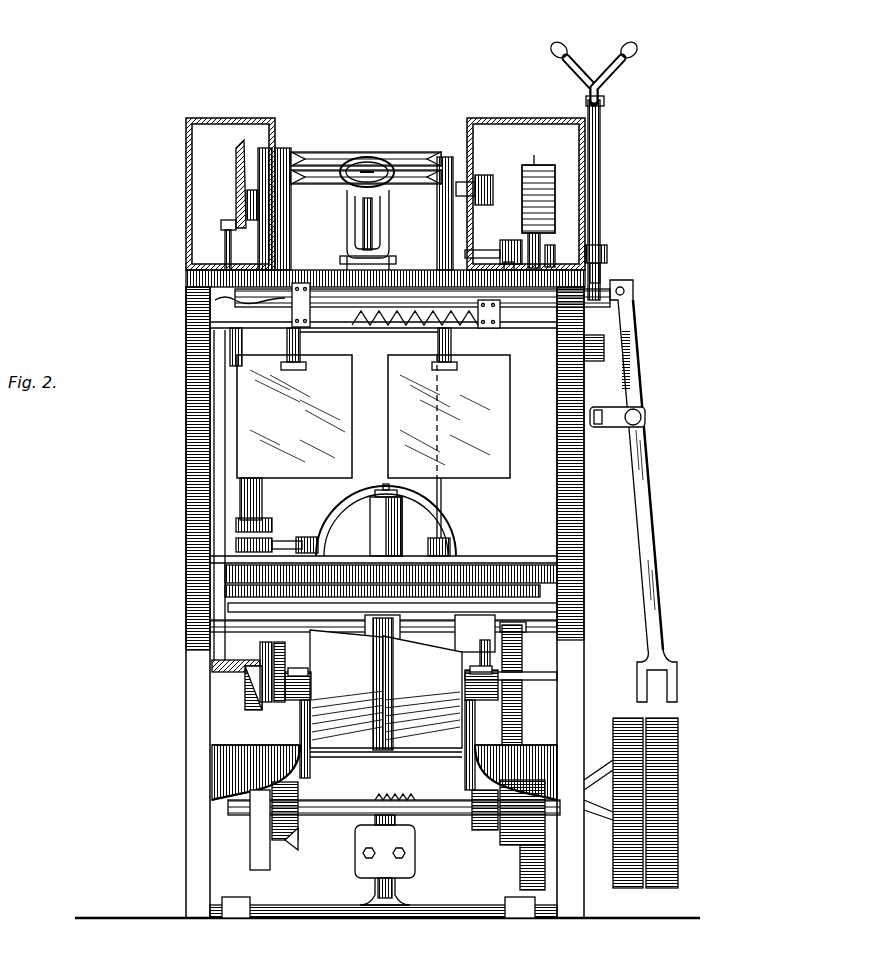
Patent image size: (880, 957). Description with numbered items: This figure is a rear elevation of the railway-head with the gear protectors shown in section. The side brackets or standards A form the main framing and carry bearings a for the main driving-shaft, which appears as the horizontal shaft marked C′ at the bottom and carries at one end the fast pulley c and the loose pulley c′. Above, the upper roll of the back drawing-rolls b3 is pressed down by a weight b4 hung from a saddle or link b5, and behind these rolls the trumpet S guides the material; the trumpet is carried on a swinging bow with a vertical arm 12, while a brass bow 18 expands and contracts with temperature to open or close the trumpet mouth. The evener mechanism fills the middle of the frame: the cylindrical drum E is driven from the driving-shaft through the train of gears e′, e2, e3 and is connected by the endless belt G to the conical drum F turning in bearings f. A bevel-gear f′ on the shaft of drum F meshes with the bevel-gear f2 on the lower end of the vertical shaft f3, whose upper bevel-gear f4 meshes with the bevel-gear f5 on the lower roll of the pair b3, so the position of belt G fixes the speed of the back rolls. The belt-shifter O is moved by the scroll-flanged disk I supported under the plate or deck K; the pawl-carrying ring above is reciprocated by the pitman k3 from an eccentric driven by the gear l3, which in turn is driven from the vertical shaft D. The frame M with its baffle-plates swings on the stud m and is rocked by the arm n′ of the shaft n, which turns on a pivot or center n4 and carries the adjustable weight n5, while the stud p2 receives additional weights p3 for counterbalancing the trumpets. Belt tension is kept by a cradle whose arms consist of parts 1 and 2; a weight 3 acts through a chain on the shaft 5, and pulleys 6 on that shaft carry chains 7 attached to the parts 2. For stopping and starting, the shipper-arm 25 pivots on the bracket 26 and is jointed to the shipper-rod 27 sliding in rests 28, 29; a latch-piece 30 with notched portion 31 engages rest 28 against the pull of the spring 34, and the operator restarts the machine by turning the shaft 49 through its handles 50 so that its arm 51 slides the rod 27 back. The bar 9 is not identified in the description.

The side brackets or standards A is at (584, 546).
The trumpet S is at (367, 157).
The back drawing-rolls b3 is at (412, 165).
The bow 18 is at (355, 205).
The vertical arm 12 is at (347, 228).
The bevel-gear f5 is at (236, 190).
The bevel-gear f4 is at (223, 232).
The vertical shaft f3 is at (214, 510).
The stud or standard p2 is at (533, 165).
The additional weights p3 is at (550, 175).
The shaft n is at (482, 250).
The pivot or center n4 is at (508, 270).
The weight n5 is at (550, 265).
The shaft 49 is at (600, 178).
The handles 50 is at (594, 72).
The arm 51 is at (608, 282).
The shipper-rod 27 is at (422, 297).
The latch-piece 30 is at (292, 295).
The rest 28 is at (290, 308).
The rest 29 is at (500, 319).
The notched portion 31 is at (275, 322).
The spring 34 is at (369, 337).
The saddle or link b5 is at (300, 338).
The weight b4 is at (373, 416).
The frame M is at (352, 492).
The stud m is at (402, 513).
The arm n′ is at (441, 487).
The vertical shaft D is at (262, 497).
The gear l3 is at (272, 522).
The pitman k3 is at (318, 540).
The plate or deck K is at (478, 556).
The disk I is at (557, 578).
The bar 9 is at (285, 600).
The belt-shifter O is at (325, 620).
The endless belt G is at (351, 689).
The conical drum F is at (422, 692).
The cylindrical drum E is at (410, 750).
The bevel-gear f2 is at (212, 667).
The bevel-gear f′ is at (248, 700).
The chain 7 is at (266, 648).
The pulleys 6 is at (280, 648).
The bearings f is at (296, 668).
The cradle part 1 is at (310, 760).
The bearings a is at (548, 820).
The shaft C′ is at (340, 800).
The weight 3 is at (250, 848).
The cradle part 2 is at (472, 822).
The gear e2 is at (500, 836).
The gear e′ is at (520, 868).
The gear e3 is at (522, 708).
The shaft 5 is at (530, 672).
The loose pulley c′ is at (618, 740).
The fast pulley c is at (678, 755).
The shipper-arm 25 is at (648, 489).
The stand or bracket 26 is at (614, 430).